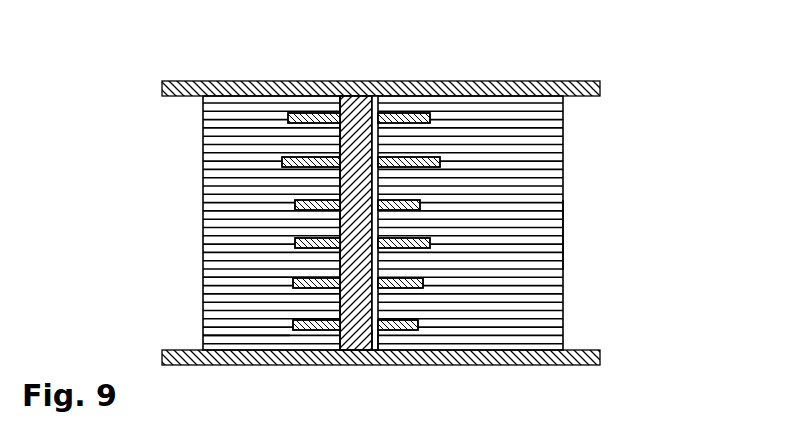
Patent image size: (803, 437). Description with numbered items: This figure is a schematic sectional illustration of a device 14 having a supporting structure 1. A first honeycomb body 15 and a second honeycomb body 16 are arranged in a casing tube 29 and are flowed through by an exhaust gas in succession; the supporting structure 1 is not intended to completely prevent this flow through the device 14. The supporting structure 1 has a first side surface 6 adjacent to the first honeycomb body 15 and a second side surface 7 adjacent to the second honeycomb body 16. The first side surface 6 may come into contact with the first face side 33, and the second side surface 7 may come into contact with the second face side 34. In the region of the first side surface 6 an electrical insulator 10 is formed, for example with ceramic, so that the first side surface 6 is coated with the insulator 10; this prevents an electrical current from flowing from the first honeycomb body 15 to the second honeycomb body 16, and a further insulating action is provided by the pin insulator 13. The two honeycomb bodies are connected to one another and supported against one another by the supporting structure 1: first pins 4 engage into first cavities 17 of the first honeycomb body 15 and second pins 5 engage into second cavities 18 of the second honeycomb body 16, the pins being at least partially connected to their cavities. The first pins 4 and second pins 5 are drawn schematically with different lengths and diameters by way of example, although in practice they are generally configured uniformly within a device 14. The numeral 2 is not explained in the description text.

The supporting structure 1 is at (373, 96).
The central hatched partition 2 is at (350, 96).
The first pins 4 is at (205, 278).
The second pins 5 is at (563, 287).
The first side surface 6 is at (332, 96).
The second side surface 7 is at (383, 102).
The electrical insulator 10 is at (345, 352).
The pin insulator 13 is at (378, 332).
The device 14 is at (624, 79).
The first honeycomb body 15 is at (205, 222).
The second honeycomb body 16 is at (563, 233).
The first cavities 17 is at (283, 163).
The second cavities 18 is at (563, 168).
The casing tube 29 is at (162, 84).
The first face side 33 is at (215, 136).
The second face side 34 is at (563, 146).